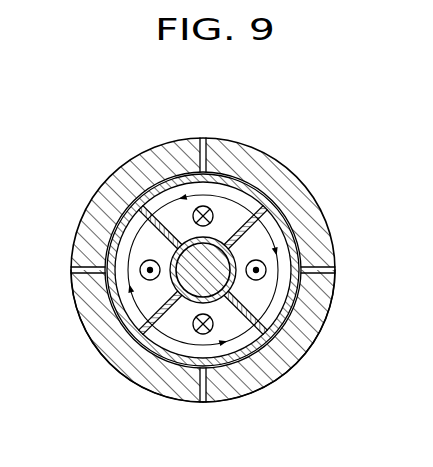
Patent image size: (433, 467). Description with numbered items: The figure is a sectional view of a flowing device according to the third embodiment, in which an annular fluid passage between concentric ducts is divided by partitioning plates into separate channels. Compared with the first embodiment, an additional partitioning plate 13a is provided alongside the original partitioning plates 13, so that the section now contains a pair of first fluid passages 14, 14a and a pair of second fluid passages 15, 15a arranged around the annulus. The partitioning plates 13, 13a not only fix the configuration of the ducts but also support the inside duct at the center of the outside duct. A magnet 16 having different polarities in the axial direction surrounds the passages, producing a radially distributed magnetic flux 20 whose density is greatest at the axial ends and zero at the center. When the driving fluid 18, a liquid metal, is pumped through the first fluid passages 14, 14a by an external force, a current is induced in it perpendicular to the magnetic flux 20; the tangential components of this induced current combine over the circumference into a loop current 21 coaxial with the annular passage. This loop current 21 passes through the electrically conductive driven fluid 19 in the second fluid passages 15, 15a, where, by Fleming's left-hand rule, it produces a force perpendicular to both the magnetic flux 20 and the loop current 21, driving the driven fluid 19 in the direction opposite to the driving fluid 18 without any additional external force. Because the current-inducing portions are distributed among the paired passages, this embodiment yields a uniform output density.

The partitioning plate 13 is at (218, 232).
The partitioning plate 13a is at (113, 236).
The first fluid passage 14 is at (158, 155).
The first fluid passage 14a is at (270, 437).
The second fluid passage 15 is at (93, 327).
The second fluid passage 15a is at (306, 342).
The magnet 16 is at (127, 162).
The driving fluid 18 is at (200, 206).
The driven fluid 19 is at (110, 258).
The magnetic flux 20 is at (300, 298).
The loop current 21 is at (100, 304).